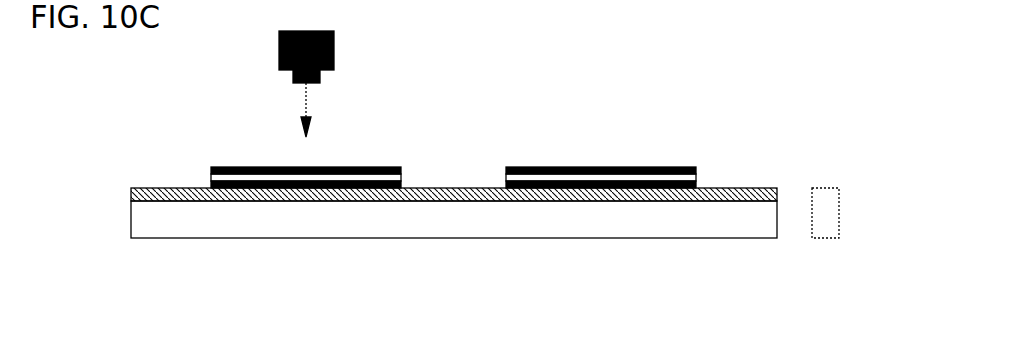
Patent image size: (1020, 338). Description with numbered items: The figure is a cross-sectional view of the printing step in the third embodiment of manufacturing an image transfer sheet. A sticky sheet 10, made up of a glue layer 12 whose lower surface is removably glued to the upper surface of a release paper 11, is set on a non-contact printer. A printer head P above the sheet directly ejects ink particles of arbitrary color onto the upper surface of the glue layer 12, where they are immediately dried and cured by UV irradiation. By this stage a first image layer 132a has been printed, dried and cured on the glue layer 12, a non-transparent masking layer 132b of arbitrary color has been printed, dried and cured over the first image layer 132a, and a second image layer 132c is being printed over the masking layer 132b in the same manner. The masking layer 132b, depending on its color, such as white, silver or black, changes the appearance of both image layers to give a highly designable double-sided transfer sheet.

The printer head P is at (280, 48).
The second image layer 132c is at (403, 171).
The masking layer 132b is at (403, 178).
The first image layer 132a is at (402, 185).
The glue layer 12 is at (748, 187).
The release paper 11 is at (744, 226).
The sticky sheet 10 is at (839, 212).